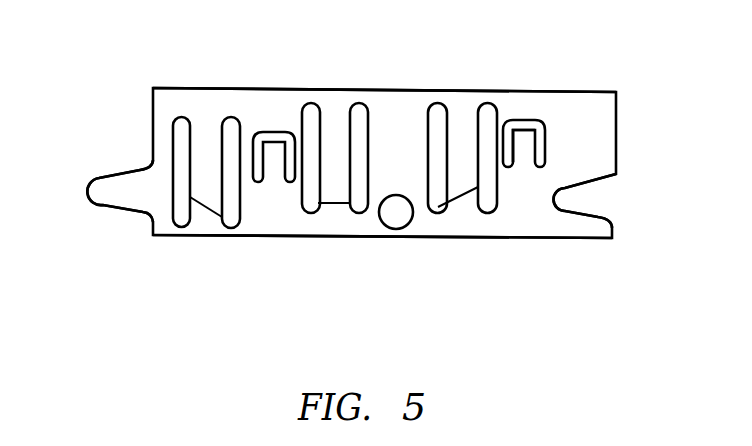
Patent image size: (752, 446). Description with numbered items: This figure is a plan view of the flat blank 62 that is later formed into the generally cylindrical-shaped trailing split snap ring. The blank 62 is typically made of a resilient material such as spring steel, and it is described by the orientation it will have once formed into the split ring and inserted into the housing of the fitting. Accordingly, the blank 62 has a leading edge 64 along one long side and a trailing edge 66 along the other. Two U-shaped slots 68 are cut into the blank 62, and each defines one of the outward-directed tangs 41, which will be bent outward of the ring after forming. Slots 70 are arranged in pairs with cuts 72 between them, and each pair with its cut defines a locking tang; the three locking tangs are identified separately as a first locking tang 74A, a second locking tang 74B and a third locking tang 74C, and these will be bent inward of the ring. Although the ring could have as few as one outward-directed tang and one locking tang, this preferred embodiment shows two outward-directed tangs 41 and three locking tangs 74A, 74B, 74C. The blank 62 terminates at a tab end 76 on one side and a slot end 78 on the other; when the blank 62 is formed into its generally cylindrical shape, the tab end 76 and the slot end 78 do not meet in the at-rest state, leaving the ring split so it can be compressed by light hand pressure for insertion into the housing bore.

The blank 62 is at (552, 269).
The leading edge 64 is at (300, 237).
The trailing edge 66 is at (385, 90).
The U-shaped slots 68 is at (533, 120).
The slots 70 is at (182, 123).
The cuts 72 is at (203, 210).
The locking tang 74A is at (205, 192).
The locking tang 74B is at (337, 180).
The locking tang 74C is at (452, 183).
The tab end 76 is at (150, 109).
The slot end 78 is at (612, 213).
The outward-directed tangs 41 is at (520, 152).